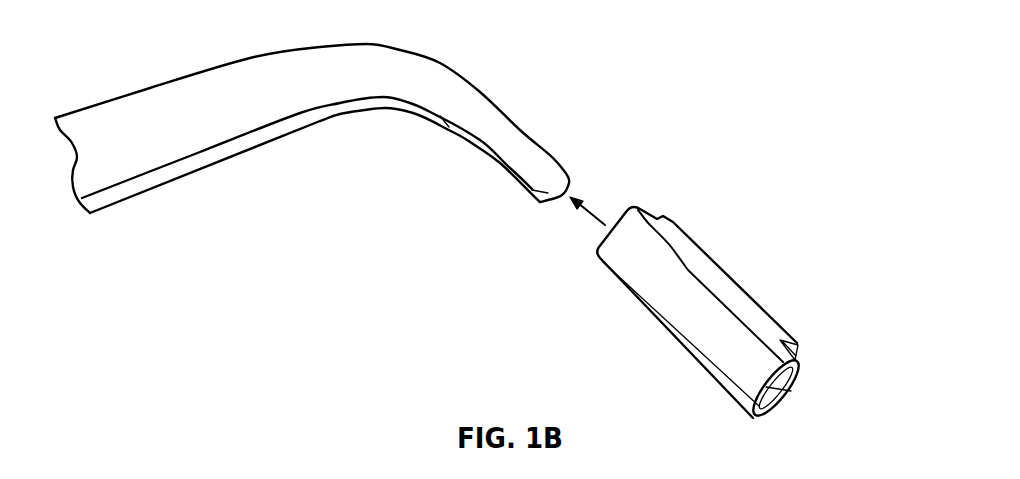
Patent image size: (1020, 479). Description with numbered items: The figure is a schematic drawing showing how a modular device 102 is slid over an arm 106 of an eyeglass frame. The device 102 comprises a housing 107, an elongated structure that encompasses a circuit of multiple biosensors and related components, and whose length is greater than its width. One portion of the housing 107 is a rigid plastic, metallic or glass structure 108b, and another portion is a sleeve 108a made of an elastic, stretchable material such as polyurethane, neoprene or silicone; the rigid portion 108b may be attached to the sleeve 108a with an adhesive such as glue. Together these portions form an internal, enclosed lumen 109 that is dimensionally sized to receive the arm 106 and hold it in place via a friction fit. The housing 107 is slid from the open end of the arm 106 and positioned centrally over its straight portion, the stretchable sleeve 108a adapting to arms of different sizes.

The modular device 102 is at (732, 278).
The arm 106 is at (518, 127).
The housing 107 is at (690, 248).
The sleeve 108a is at (798, 398).
The rigid plastic, metallic or glass structure 108b is at (795, 352).
The lumen 109 is at (618, 216).